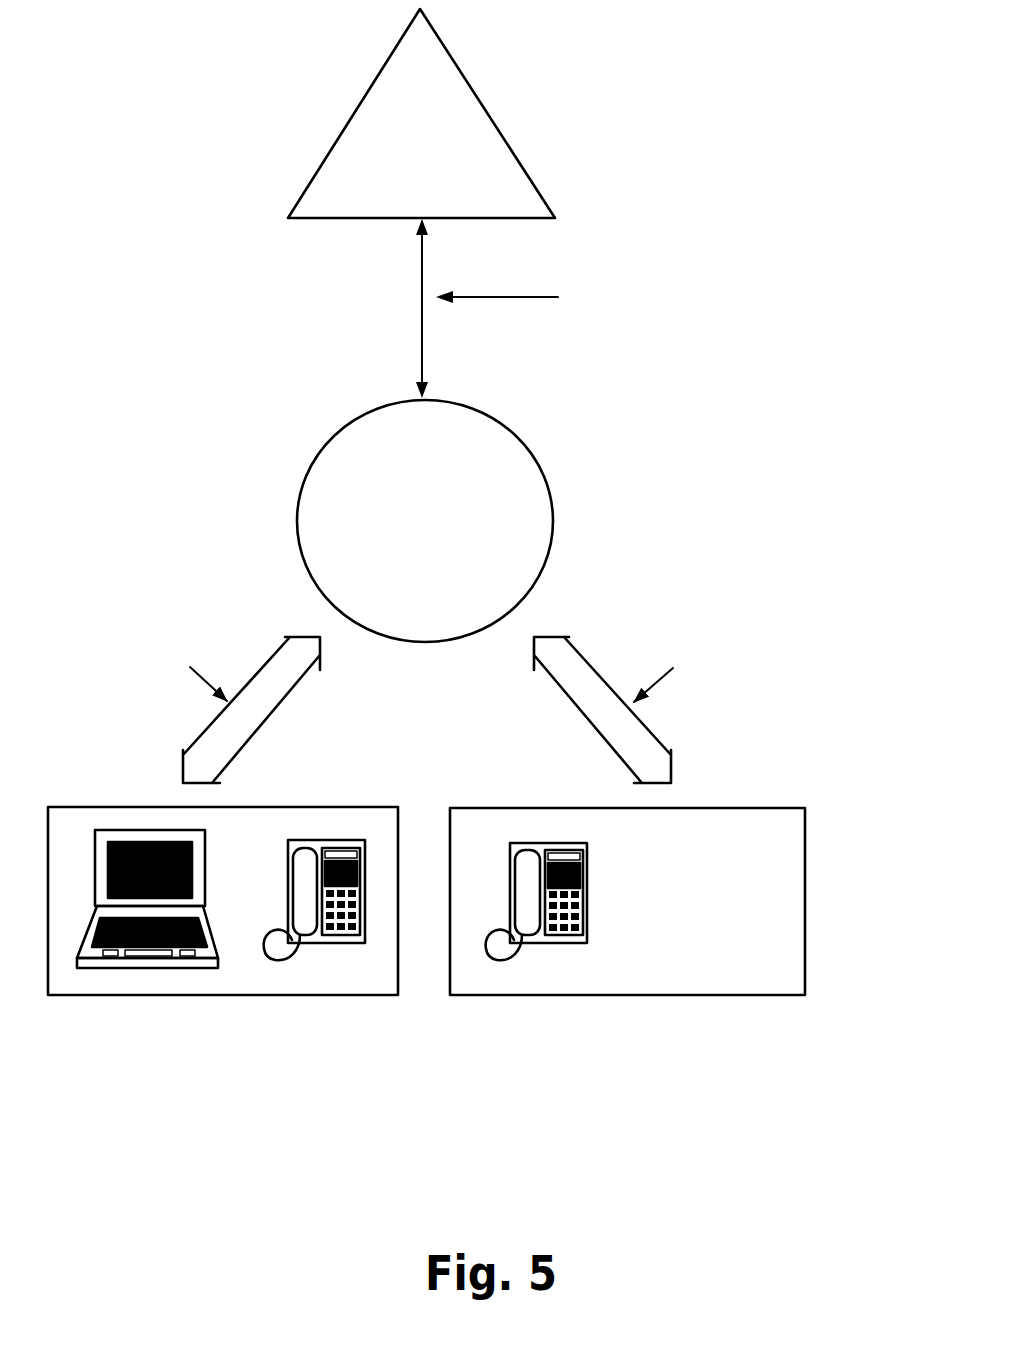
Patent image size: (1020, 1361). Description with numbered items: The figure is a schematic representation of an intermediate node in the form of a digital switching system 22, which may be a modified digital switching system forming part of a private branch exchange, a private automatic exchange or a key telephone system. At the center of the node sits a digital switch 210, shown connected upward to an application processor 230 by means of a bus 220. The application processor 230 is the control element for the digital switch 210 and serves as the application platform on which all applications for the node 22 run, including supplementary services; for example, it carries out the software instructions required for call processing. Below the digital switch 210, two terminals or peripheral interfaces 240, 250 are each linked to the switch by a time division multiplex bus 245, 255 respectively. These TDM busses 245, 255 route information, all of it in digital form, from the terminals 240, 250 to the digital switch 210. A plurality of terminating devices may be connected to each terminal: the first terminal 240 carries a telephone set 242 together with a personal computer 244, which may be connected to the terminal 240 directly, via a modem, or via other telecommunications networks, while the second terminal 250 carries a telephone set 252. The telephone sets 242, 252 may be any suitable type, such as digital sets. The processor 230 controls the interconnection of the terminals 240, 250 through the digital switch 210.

The digital switching system 22 is at (800, 362).
The digital switch 210 is at (515, 470).
The bus 220 is at (430, 343).
The application processor 230 is at (477, 135).
The terminal 240 is at (242, 922).
The telephone set 242 is at (343, 853).
The personal computer 244 is at (120, 967).
The time division multiplex bus 245 is at (217, 735).
The terminal 250 is at (674, 918).
The telephone set 252 is at (588, 902).
The time division multiplex bus 255 is at (632, 737).